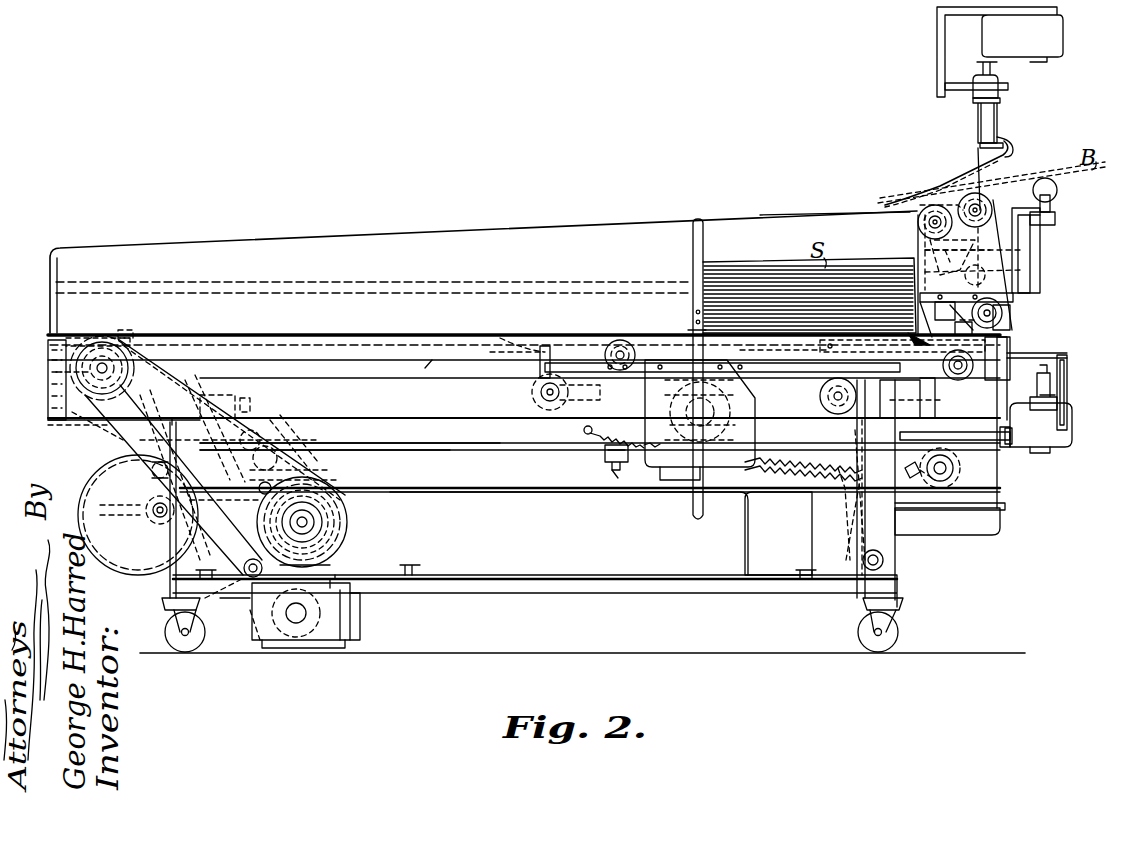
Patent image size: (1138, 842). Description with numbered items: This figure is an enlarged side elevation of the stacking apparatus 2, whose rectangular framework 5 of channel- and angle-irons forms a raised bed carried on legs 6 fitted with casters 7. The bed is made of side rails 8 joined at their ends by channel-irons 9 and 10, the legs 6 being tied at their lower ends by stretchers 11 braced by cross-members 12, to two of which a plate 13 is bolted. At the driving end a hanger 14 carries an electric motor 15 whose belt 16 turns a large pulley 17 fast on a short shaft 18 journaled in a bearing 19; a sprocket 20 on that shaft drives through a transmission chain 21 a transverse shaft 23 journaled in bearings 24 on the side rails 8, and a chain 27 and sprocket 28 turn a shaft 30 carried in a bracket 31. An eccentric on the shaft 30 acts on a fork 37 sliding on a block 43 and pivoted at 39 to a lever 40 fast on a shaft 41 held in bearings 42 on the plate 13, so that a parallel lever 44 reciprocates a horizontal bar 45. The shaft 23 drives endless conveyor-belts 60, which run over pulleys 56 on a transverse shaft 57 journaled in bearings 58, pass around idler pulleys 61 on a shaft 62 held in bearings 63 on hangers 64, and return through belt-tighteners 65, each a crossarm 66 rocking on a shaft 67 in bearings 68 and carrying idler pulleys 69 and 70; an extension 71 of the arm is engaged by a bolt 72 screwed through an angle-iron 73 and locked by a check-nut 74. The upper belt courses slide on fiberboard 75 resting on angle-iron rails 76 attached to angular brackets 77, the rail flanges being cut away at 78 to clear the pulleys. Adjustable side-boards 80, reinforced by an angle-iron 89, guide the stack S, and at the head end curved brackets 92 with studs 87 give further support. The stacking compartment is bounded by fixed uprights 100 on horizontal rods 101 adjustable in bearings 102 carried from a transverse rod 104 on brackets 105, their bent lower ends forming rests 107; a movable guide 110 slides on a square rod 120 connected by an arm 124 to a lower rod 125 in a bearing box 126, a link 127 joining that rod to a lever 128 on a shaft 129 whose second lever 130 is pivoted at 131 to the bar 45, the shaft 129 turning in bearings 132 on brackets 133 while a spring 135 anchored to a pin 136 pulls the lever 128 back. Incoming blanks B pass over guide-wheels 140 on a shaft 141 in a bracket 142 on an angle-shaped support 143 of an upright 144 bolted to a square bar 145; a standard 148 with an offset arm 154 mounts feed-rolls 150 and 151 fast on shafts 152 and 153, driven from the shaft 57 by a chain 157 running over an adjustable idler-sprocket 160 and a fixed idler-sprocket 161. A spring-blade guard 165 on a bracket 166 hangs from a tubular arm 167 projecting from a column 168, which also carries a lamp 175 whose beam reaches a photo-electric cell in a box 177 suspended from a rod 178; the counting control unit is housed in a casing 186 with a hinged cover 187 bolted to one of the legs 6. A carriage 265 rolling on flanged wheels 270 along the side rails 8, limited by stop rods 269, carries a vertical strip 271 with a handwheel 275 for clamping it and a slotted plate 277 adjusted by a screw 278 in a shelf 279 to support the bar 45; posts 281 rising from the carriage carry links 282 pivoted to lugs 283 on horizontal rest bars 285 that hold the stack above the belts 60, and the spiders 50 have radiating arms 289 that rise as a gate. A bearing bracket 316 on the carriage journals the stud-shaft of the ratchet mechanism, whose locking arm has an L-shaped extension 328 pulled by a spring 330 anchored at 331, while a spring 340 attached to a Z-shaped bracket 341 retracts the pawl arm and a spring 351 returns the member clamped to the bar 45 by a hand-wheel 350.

The machine 2 is at (548, 190).
The frame rail 5 is at (385, 424).
The upright 6 is at (170, 540).
The caster 7 is at (162, 604).
The frame member 8 is at (500, 428).
The frame end bar 9 is at (52, 405).
The bracket 10 is at (1036, 378).
The lower frame panel 11 is at (515, 576).
The bolt bracket 12 is at (202, 566).
The motor mount 13 is at (388, 612).
The motor 14 is at (350, 620).
The mounting plate 15 is at (340, 575).
The motor base 16 is at (252, 624).
The large wheel 17 is at (105, 492).
The hub 18 is at (152, 514).
The shaft 19 is at (160, 522).
The hub flange 20 is at (146, 507).
The belt 21 is at (105, 452).
The end roller housing 23 is at (52, 354).
The belt 24 is at (150, 355).
The link 27 is at (322, 472).
The link 28 is at (345, 481).
The drive pulley 30 is at (310, 522).
The pulley support 31 is at (338, 556).
The pulley rim 37 is at (338, 500).
The pivot 39 is at (303, 484).
The motor pulley 40 is at (250, 560).
The caster bracket 41 is at (226, 628).
The belt 42 is at (240, 605).
The pulley hub 43 is at (340, 526).
The frame rail 44 is at (330, 443).
The frame rail 45 is at (474, 452).
The hopper 50 is at (720, 259).
The bearing block 56 is at (900, 378).
The side plate 57 is at (1010, 360).
The bearing 58 is at (922, 388).
The rail 60 is at (394, 340).
The pawl 61 is at (938, 484).
The plate 62 is at (962, 488).
The gear 63 is at (958, 468).
The shaft 64 is at (924, 400).
The roller 65 is at (252, 428).
The roller 66 is at (276, 444).
The bracket 67 is at (258, 404).
The upright post 68 is at (170, 504).
The guide 69 is at (225, 400).
The belt run 70 is at (262, 432).
The tensioner 71 is at (98, 436).
The spoke 72 is at (100, 511).
The bearing 73 is at (152, 470).
The spoke 74 is at (100, 498).
The top rail 75 is at (326, 336).
The bar 76 is at (420, 366).
The roller 77 is at (52, 373).
The bracket 78 is at (125, 340).
The hood 80 is at (428, 242).
The block 87 is at (1008, 348).
The conveyor 89 is at (505, 282).
The lever 92 is at (1003, 328).
The head frame 100 is at (918, 238).
The bar 101 is at (1014, 300).
The gear 102 is at (1002, 318).
The lever 104 is at (1003, 320).
The gear 105 is at (990, 362).
The rod 107 is at (875, 350).
The roller 110 is at (917, 226).
The plate 120 is at (1094, 352).
The bar 124 is at (1068, 385).
The bracket 125 is at (1040, 453).
The plate 126 is at (1015, 447).
The upright 127 is at (895, 412).
The cam 128 is at (912, 482).
The roller 129 is at (880, 566).
The link 130 is at (858, 516).
The upright 131 is at (880, 434).
The roller 132 is at (884, 558).
The link 133 is at (856, 538).
The shaft 135 is at (998, 445).
The collar 136 is at (1012, 444).
The feed line 140 is at (1060, 192).
The switch 141 is at (1060, 193).
The switch base 142 is at (1056, 216).
The bracket 143 is at (1035, 250).
The bar 144 is at (1030, 270).
The bar 145 is at (1002, 296).
The shaft 148 is at (920, 250).
The guide 150 is at (962, 190).
The guide 151 is at (930, 198).
The roller 152 is at (996, 210).
The plate 153 is at (905, 211).
The guide 154 is at (918, 184).
The bracket 157 is at (1088, 244).
The link 160 is at (1022, 252).
The link 161 is at (1088, 264).
The flange 165 is at (972, 165).
The cylinder 166 is at (980, 133).
The collar 167 is at (1000, 80).
The rod 168 is at (995, 178).
The motor housing 175 is at (1063, 40).
The housing 177 is at (1072, 440).
The rod 178 is at (1070, 366).
The direction arrow 186 is at (992, 544).
The tray 187 is at (1000, 526).
The roller 265 is at (525, 405).
The bar 269 is at (70, 428).
The roller 270 is at (530, 386).
The bracket 271 is at (600, 392).
The sprocket 275 is at (605, 352).
The switch 277 is at (604, 465).
The rail 278 is at (600, 488).
The lever 279 is at (628, 480).
The shaft 281 is at (540, 368).
The link 282 is at (512, 352).
The link 283 is at (518, 340).
The bracket 285 is at (688, 330).
The post 289 is at (690, 296).
The sprocket 316 is at (818, 392).
The gear box 328 is at (661, 468).
The spring 330 is at (600, 446).
The spring anchor 331 is at (584, 432).
The spring 340 is at (835, 460).
The link 341 is at (850, 492).
The spring 350 is at (800, 438).
The housing 351 is at (800, 493).